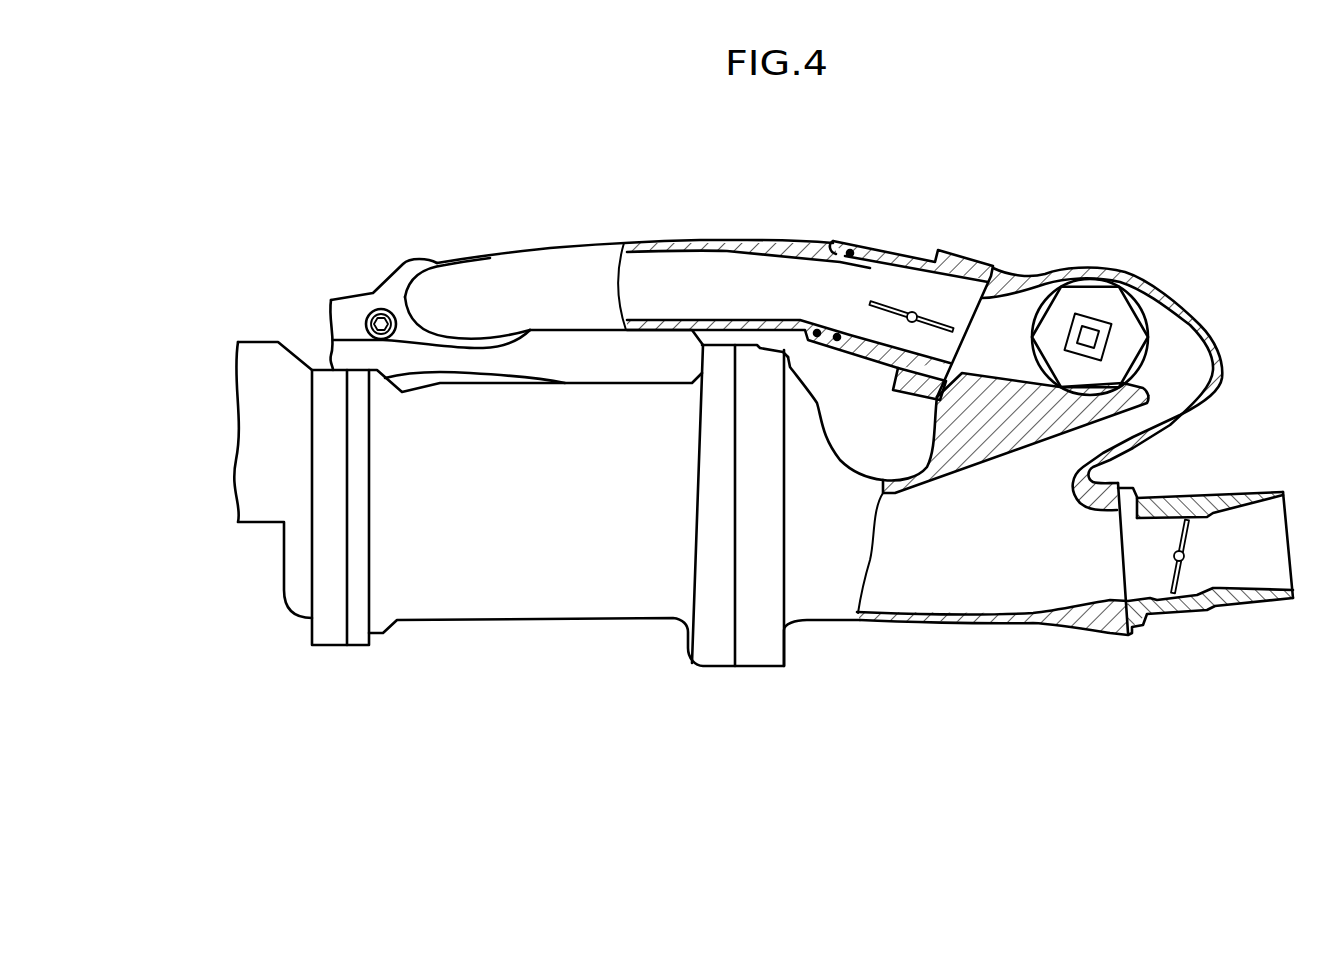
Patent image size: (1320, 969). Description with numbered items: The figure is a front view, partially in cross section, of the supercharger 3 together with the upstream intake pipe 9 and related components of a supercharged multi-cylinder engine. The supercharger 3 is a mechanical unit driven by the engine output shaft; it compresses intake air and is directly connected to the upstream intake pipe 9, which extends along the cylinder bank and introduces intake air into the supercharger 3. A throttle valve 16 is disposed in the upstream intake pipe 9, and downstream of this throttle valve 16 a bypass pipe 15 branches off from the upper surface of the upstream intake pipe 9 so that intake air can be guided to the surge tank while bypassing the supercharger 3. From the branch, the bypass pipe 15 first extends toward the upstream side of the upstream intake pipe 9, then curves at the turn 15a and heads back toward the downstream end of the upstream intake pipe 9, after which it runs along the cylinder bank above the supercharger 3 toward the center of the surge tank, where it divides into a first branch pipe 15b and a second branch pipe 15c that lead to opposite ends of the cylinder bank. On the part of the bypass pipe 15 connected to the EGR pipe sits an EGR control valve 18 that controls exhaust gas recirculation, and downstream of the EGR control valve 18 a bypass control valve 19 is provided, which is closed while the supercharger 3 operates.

The supercharger 3 is at (520, 620).
The upstream intake pipe 9 is at (1092, 625).
The bypass pipe 15 is at (745, 240).
The turn 15a is at (1225, 353).
The first branch pipe 15b is at (353, 307).
The second branch pipe 15c is at (565, 347).
The throttle valve 16 is at (1187, 540).
The EGR control valve 18 is at (1110, 300).
The bypass control valve 19 is at (893, 303).